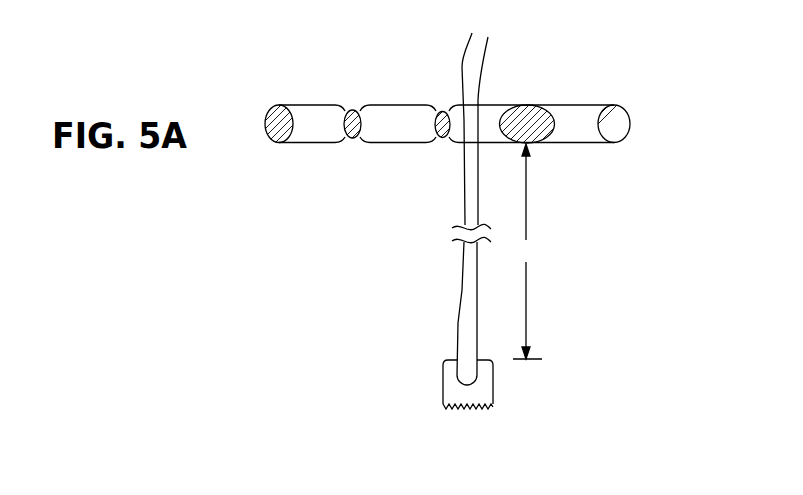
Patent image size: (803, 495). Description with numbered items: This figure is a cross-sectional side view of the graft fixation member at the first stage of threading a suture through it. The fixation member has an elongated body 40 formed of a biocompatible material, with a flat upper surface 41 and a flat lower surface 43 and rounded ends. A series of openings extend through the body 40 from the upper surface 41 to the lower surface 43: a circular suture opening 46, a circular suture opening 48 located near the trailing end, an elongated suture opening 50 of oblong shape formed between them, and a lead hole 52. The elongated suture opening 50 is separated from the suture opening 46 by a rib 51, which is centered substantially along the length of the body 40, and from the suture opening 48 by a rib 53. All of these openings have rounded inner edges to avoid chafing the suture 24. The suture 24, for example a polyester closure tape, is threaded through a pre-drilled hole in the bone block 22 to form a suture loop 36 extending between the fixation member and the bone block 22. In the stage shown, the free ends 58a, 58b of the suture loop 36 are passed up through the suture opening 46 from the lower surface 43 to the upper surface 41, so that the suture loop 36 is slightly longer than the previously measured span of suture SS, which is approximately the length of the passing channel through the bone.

The elongated body 40 is at (631, 128).
The upper surface 41 is at (300, 103).
The suture opening 48 is at (308, 143).
The rib 53 is at (353, 106).
The elongated suture opening 50 is at (380, 143).
The rib 51 is at (441, 104).
The suture opening 46 is at (457, 144).
The lead hole 52 is at (588, 112).
The lower surface 43 is at (590, 146).
The free end 58a is at (471, 36).
The free end 58b is at (489, 44).
The suture 24 is at (455, 268).
The suture loop 36 is at (458, 323).
The bone block 22 is at (453, 393).
The span of suture SS is at (528, 251).